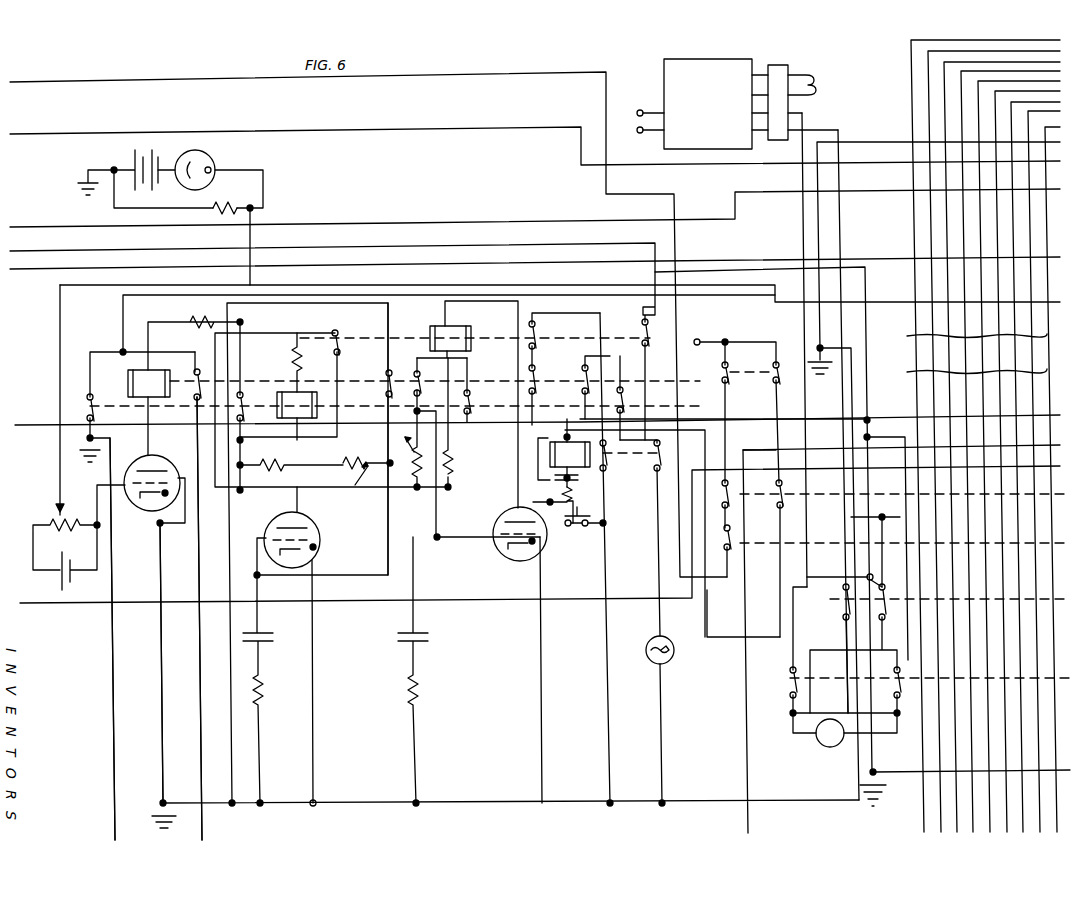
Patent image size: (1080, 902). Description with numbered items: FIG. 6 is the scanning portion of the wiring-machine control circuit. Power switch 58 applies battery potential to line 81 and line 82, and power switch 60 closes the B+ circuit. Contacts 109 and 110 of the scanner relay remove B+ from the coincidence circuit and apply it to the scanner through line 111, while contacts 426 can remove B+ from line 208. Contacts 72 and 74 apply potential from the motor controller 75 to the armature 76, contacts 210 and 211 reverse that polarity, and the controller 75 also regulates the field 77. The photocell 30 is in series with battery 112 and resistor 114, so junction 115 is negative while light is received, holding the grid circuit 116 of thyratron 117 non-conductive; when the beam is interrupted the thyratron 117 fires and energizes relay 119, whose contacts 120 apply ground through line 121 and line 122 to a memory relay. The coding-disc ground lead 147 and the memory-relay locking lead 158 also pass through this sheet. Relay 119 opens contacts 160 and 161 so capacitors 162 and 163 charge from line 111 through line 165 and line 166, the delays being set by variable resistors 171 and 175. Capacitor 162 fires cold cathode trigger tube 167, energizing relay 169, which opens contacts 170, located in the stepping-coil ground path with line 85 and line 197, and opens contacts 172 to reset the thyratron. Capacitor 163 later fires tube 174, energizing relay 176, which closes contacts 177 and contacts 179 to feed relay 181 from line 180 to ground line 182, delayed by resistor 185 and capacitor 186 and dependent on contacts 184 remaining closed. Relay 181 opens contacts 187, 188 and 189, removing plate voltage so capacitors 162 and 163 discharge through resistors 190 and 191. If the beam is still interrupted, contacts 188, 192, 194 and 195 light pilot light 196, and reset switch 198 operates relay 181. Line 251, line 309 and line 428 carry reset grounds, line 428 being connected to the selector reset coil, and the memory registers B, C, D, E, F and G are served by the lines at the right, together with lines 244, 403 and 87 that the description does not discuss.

The line 208 is at (62, 84).
The conductor 244 is at (42, 136).
The conductor 403 is at (60, 227).
The line 309 is at (132, 248).
The line 81 is at (40, 272).
The line 197 is at (520, 287).
The lead 158 is at (40, 427).
The line 85 is at (1044, 448).
The line 251 is at (78, 602).
The battery 112 is at (136, 159).
The photocell 30 is at (216, 164).
The resistor 114 is at (248, 206).
The junction 115 is at (258, 210).
The motor controller 75 is at (664, 95).
The field 77 is at (817, 90).
The line 428 is at (911, 212).
The memory register G is at (1014, 48).
The memory register F is at (969, 62).
The memory register E is at (986, 71).
The memory register D is at (1004, 82).
The memory register C is at (1020, 98).
The memory register B is at (1038, 102).
The line 122 is at (1060, 116).
The conductor 87 is at (1046, 140).
The line 182 is at (1048, 164).
The line 82 is at (894, 436).
The contacts 170 is at (82, 402).
The relay 119 is at (144, 382).
The contacts 120 is at (192, 398).
The thyratron 117 is at (134, 506).
The grid circuit 116 is at (80, 520).
The ground lead 147 is at (112, 804).
The line 121 is at (198, 713).
The line 111 is at (276, 490).
The contacts 172 is at (244, 392).
The contacts 177 is at (332, 334).
The relay 169 is at (296, 420).
The line 165 is at (320, 465).
The variable resistor 171 is at (368, 460).
The contacts 160 is at (384, 382).
The contacts 161 is at (419, 383).
The variable resistor 175 is at (406, 428).
The line 166 is at (414, 490).
The relay 176 is at (451, 332).
The contacts 187 is at (466, 418).
The cold cathode trigger tube 167 is at (320, 542).
The cold cathode trigger tube 174 is at (508, 555).
The capacitor 162 is at (266, 638).
The resistor 190 is at (284, 692).
The capacitor 163 is at (440, 630).
The resistor 191 is at (440, 690).
The contacts 179 is at (536, 328).
The contacts 184 is at (544, 368).
The contacts 192 is at (584, 380).
The relay 181 is at (560, 438).
The capacitor 186 is at (557, 478).
The resistor 185 is at (552, 500).
The reset switch 198 is at (576, 526).
The contacts 188 is at (610, 484).
The contacts 189 is at (612, 518).
The pilot light 196 is at (656, 656).
The contacts 195 is at (654, 317).
The contacts 194 is at (642, 406).
The power switch 60 is at (738, 358).
The contacts 109 is at (734, 496).
The contacts 110 is at (783, 489).
The contacts 426 is at (732, 580).
The line 180 is at (770, 440).
The power switch 58 is at (848, 573).
The contacts 210 is at (834, 592).
The contacts 211 is at (854, 620).
The contacts 72 is at (788, 670).
The contacts 74 is at (890, 684).
The armature 76 is at (822, 746).